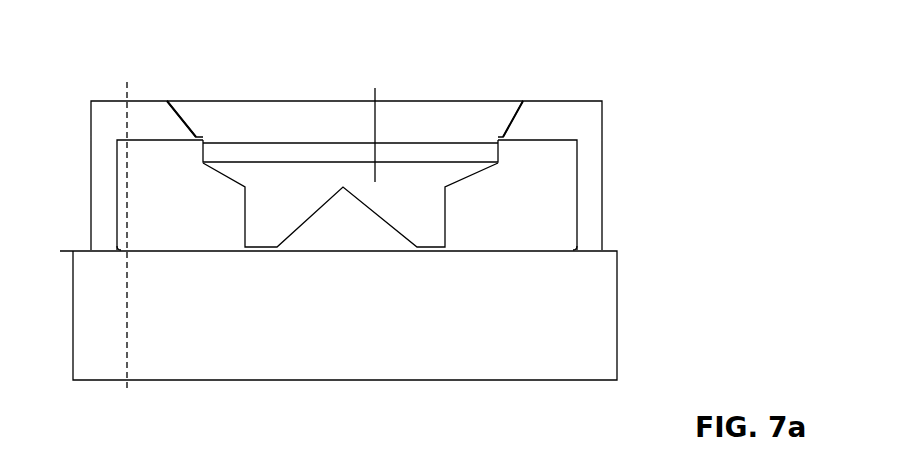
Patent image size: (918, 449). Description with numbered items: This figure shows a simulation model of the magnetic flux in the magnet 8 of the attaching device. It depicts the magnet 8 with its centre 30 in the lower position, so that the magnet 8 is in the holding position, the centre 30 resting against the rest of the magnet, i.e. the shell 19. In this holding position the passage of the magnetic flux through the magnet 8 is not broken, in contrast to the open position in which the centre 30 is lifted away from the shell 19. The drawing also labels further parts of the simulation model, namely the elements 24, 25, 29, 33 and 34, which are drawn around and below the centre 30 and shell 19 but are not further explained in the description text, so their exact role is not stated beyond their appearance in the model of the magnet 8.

The magnet 8 is at (691, 131).
The shell 19 is at (108, 120).
The membrane layer 24 is at (303, 153).
The center line 25 is at (376, 124).
The support block 29 is at (148, 190).
The centre 30 is at (233, 113).
The base substrate 33 is at (602, 312).
The chamfered edge 34 is at (181, 111).